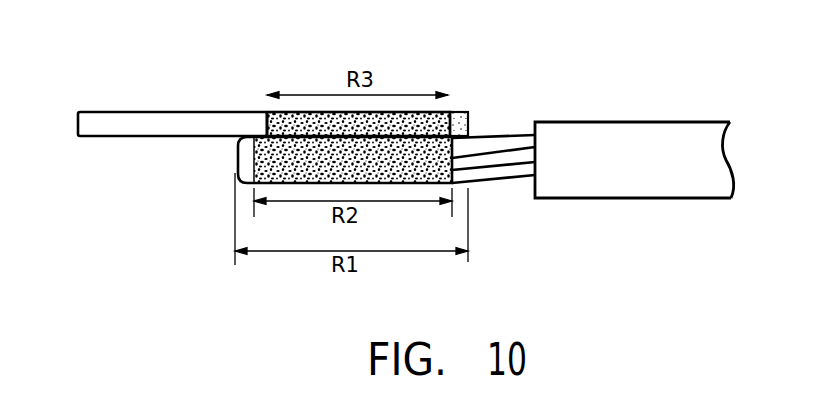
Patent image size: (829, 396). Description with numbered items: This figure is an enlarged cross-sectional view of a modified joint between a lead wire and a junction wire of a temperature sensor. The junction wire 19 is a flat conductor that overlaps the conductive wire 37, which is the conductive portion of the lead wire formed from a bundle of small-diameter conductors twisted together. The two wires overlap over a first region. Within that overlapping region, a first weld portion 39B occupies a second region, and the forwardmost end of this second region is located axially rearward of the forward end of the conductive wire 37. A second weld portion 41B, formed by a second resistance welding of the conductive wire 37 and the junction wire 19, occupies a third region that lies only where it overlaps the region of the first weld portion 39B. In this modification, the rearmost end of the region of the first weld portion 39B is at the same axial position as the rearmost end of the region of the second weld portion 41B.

The junction wire 19 is at (173, 110).
The second weld portion 41B is at (451, 112).
The first weld portion 39B is at (250, 153).
The conductive wire 37 is at (495, 183).